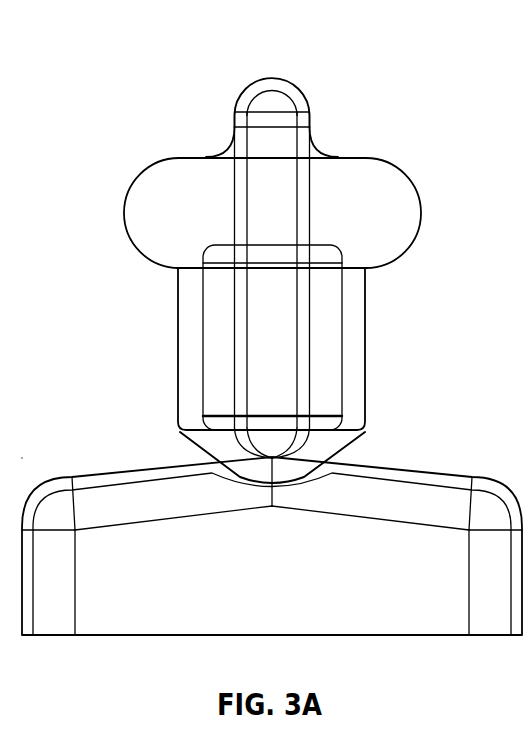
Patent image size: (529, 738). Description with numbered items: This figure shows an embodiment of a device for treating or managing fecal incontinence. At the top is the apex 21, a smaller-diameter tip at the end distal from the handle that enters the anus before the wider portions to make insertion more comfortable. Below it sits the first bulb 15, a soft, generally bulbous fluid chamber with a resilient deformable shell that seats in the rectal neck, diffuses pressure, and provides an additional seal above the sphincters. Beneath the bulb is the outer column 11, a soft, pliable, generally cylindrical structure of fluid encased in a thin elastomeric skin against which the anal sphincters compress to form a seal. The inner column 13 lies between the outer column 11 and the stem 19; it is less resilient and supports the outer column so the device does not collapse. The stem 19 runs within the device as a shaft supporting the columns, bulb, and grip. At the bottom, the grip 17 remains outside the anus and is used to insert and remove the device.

The outer column 11 is at (367, 312).
The inner column 13 is at (328, 360).
The first bulb 15 is at (422, 218).
The grip 17 is at (363, 613).
The stem 19 is at (272, 212).
The apex 21 is at (272, 78).